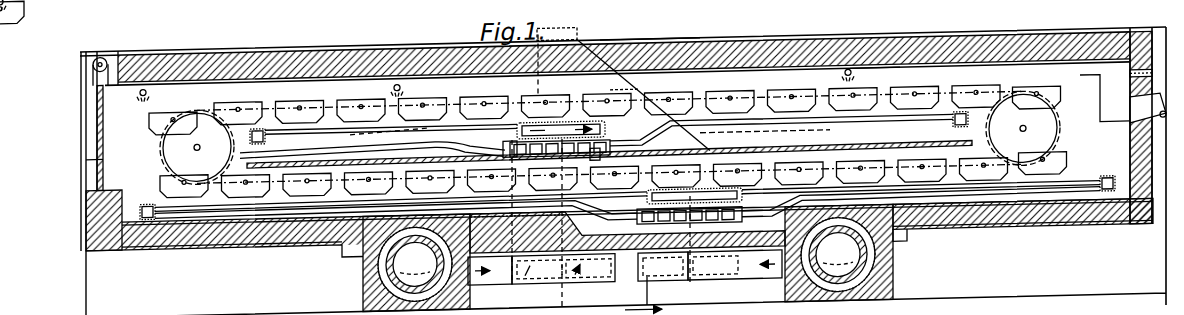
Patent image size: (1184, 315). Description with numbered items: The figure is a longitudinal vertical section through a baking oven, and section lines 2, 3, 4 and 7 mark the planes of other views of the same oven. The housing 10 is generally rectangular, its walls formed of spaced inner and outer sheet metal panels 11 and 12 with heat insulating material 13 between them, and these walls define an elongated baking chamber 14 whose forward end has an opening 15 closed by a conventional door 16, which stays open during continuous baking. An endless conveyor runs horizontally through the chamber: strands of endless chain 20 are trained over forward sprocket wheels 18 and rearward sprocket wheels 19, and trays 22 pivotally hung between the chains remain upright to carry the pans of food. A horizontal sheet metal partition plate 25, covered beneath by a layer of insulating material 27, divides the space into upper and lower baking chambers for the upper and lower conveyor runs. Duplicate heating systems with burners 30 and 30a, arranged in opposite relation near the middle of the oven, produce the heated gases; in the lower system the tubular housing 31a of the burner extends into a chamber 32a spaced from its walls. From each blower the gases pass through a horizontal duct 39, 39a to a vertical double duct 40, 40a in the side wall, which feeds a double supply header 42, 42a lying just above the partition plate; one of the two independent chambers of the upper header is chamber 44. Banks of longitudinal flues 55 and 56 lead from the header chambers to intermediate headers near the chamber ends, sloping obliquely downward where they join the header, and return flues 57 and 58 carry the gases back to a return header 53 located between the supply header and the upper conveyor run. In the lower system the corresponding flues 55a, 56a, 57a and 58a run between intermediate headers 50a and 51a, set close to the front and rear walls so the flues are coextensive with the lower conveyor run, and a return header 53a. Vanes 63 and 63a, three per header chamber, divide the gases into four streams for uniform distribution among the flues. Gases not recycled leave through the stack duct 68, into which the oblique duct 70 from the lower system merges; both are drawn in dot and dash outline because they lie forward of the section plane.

The section line 2- 2 is at (77, 214).
The section line 3- 3 is at (417, 48).
The section line 4- 4 is at (629, 46).
The section line 7- 7 is at (332, 292).
The housing 10 is at (715, 60).
The inner sheet metal panels 11 is at (745, 87).
The outer sheet metal panels 12 is at (750, 48).
The heat insulating material 13 is at (640, 51).
The baking chamber 14 is at (867, 91).
The opening 15 is at (103, 162).
The door 16 is at (93, 168).
The sprocket wheels 18 is at (162, 152).
The sprocket wheels 19 is at (1045, 145).
The endless chain 20 is at (880, 105).
The trays 22 is at (337, 111).
The partition plate 25 is at (740, 140).
The layer of heat insulating material 27 is at (333, 147).
The heat producing unit 30 is at (367, 300).
The heat producing unit 30a is at (893, 296).
The tubular housing 31a is at (830, 307).
The chamber 32a is at (775, 308).
The horizontally extending duct 39 is at (498, 290).
The horizontally extending duct 39a is at (755, 288).
The vertical double duct 40 is at (555, 296).
The vertical double duct 40a is at (690, 297).
The double supply header 42 is at (520, 150).
The double supply header 42a is at (592, 172).
The chamber of double supply header 44 is at (505, 158).
The intermediate header 50a is at (147, 206).
The intermediate header 51a is at (1105, 200).
The return header 53 is at (543, 133).
The return header 53a is at (780, 159).
The flues 55 is at (460, 147).
The flues 55a is at (588, 225).
The flues 56 is at (665, 150).
The flues 56a is at (802, 229).
The return flues 57 is at (330, 141).
The return flues 57a is at (300, 256).
The return flues 58 is at (812, 160).
The return flues 58a is at (947, 212).
The vanes 63 is at (560, 175).
The vanes 63a is at (655, 237).
The stack duct 68 is at (572, 31).
The duct 70 is at (640, 96).